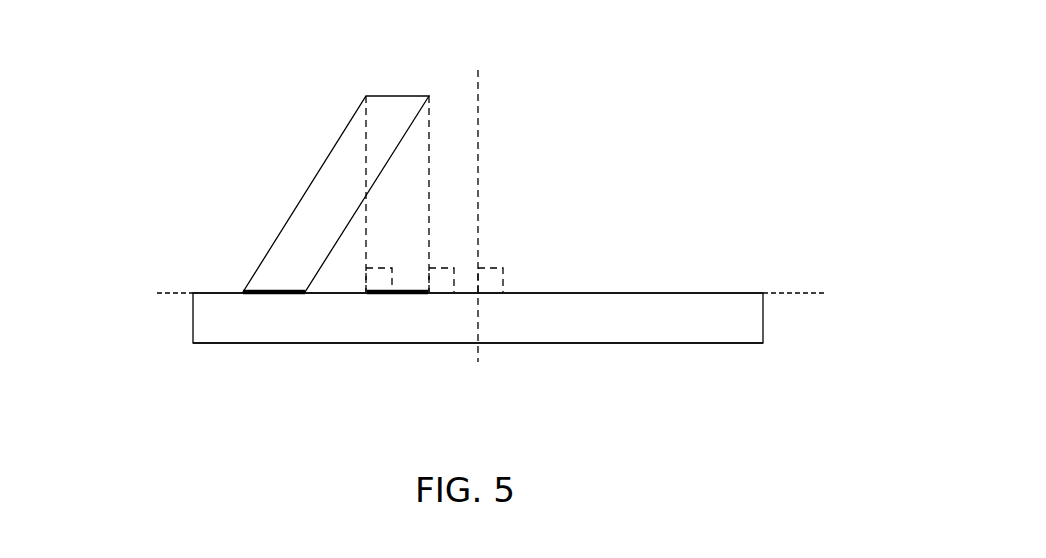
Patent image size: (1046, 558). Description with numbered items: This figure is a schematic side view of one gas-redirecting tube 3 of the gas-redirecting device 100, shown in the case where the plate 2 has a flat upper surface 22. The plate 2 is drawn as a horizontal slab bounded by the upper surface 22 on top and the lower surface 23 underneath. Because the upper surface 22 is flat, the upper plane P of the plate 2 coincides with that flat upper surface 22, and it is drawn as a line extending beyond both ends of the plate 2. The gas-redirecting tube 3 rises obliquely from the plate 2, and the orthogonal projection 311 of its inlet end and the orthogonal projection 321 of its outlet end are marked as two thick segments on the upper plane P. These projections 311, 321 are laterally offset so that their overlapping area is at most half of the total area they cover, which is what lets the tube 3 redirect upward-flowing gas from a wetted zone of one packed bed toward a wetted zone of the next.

The gas-redirecting device 100 is at (145, 138).
The plate 2 is at (252, 320).
The upper surface 22 is at (628, 293).
The lower surface 23 is at (697, 343).
The upper plane P is at (790, 293).
The gas-redirecting tube 3 is at (315, 195).
The orthogonal projection of the inlet end 311 is at (275, 295).
The orthogonal projection of the outlet end 321 is at (398, 295).